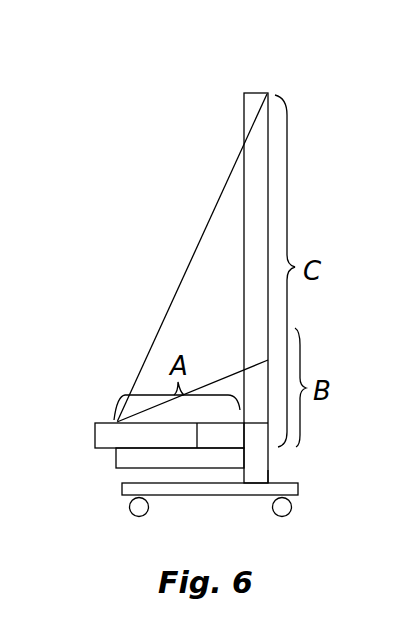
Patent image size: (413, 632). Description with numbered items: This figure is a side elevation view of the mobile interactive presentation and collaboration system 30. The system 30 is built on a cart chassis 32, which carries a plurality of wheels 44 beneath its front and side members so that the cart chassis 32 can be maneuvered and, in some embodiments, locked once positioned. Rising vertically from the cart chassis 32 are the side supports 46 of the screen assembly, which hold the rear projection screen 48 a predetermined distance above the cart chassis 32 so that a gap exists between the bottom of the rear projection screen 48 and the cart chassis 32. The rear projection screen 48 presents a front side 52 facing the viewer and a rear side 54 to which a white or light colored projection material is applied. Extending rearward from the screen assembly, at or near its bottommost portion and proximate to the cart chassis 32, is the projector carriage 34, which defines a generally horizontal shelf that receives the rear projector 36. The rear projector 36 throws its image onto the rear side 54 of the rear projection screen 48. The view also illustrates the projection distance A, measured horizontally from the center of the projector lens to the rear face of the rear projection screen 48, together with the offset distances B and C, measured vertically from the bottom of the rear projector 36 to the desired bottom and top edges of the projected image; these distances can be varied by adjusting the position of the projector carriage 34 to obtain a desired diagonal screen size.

The mobile interactive presentation and collaboration system 30 is at (292, 77).
The cart chassis 32 is at (222, 489).
The projector carriage 34 is at (118, 456).
The rear projector 36 is at (114, 420).
The wheels 44 is at (138, 505).
The side supports 46 is at (254, 255).
The rear projection screen 48 is at (250, 172).
The front side 52 is at (276, 475).
The rear side 54 is at (230, 300).